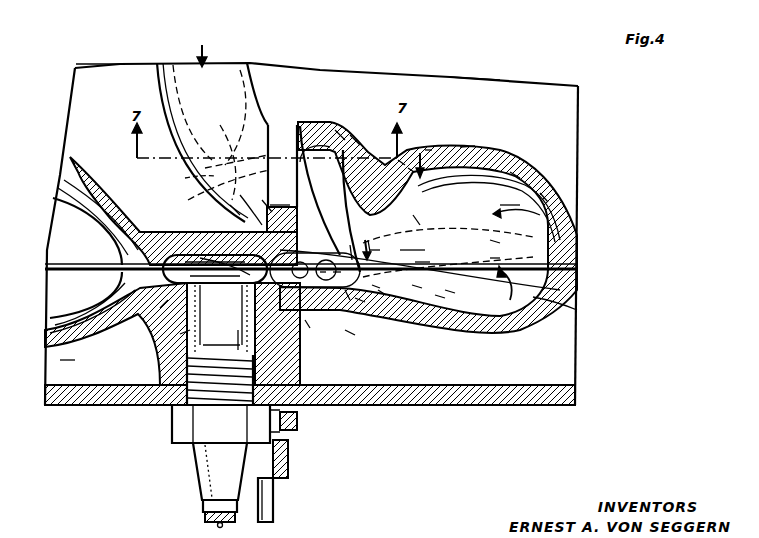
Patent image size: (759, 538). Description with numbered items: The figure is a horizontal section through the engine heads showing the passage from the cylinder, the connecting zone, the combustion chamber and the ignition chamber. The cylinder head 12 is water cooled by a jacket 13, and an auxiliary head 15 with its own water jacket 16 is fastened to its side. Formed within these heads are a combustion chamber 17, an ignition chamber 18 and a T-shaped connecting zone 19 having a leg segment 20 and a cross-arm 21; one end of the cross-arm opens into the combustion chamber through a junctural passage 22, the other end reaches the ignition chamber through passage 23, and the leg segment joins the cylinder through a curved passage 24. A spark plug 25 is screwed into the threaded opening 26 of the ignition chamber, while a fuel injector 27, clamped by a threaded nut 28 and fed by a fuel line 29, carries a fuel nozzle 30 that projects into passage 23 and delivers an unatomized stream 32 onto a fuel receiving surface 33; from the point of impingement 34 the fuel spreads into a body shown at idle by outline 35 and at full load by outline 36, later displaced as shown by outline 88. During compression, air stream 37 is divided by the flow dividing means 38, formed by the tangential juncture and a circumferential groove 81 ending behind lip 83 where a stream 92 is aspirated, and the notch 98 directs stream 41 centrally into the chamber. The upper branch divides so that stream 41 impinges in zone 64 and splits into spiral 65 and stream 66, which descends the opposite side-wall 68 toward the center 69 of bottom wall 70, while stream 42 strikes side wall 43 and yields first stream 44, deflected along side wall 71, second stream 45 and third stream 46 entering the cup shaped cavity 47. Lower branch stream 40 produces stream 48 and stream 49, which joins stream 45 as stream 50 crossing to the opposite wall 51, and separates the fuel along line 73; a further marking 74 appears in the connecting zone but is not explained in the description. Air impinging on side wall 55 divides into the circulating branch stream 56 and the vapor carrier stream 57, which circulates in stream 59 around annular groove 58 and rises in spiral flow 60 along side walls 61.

The cylinder head 12 is at (492, 88).
The jacket 13 is at (315, 92).
The auxiliary head 15 is at (343, 406).
The water jacket 16 is at (287, 362).
The combustion chamber 17 is at (484, 207).
The ignition chamber 18 is at (207, 362).
The T-shaped connecting zone 19 is at (410, 165).
The leg segment 20 is at (403, 160).
The cross-arm 21 is at (360, 300).
The junctural passage 22 is at (417, 287).
The passage 23 is at (226, 233).
The curved passage 24 is at (284, 122).
The spark plug 25 is at (213, 468).
The threaded opening 26 is at (173, 414).
The fuel injector 27 is at (288, 441).
The threaded nut 28 is at (298, 418).
The fuel line 29 is at (274, 494).
The fuel nozzle 30 is at (307, 327).
The unatomized stream 32 is at (250, 322).
The fuel receiving surface 33 is at (412, 255).
The point of impingement 34 is at (323, 272).
The outline 35 is at (281, 202).
The outline 36 is at (497, 243).
The stream 37 is at (185, 178).
The flow dividing means 38 is at (340, 130).
The lower branch stream 40 is at (319, 205).
The stream 41 is at (498, 285).
The stream 42 is at (377, 287).
The side wall 43 is at (350, 333).
The first stream 44 is at (440, 297).
The second stream 45 is at (371, 238).
The third stream 46 is at (337, 272).
The cup shaped cavity 47 is at (236, 213).
The stream 48 is at (380, 293).
The stream 49 is at (315, 269).
The stream 50 is at (416, 214).
The opposite wall 51 is at (380, 255).
The side wall 55 is at (266, 207).
The branch stream 56 is at (347, 300).
The branch stream 57 is at (212, 257).
The annular groove 58 is at (163, 309).
The stream 59 is at (114, 246).
The spiral flow 60 is at (228, 314).
The side walls 61 is at (187, 333).
The zone 64 is at (577, 310).
The spiral 65 is at (545, 196).
The stream 66 is at (424, 188).
The opposite side-wall 68 is at (468, 148).
The center 69 is at (517, 175).
The bottom wall 70 is at (500, 258).
The side wall 71 is at (450, 293).
The line 73 is at (353, 255).
The line 74 is at (422, 262).
The circumferential groove 81 is at (358, 135).
The lip 83 is at (308, 133).
The outline 88 is at (245, 200).
The stream 92 is at (312, 176).
The notch 98 is at (428, 150).